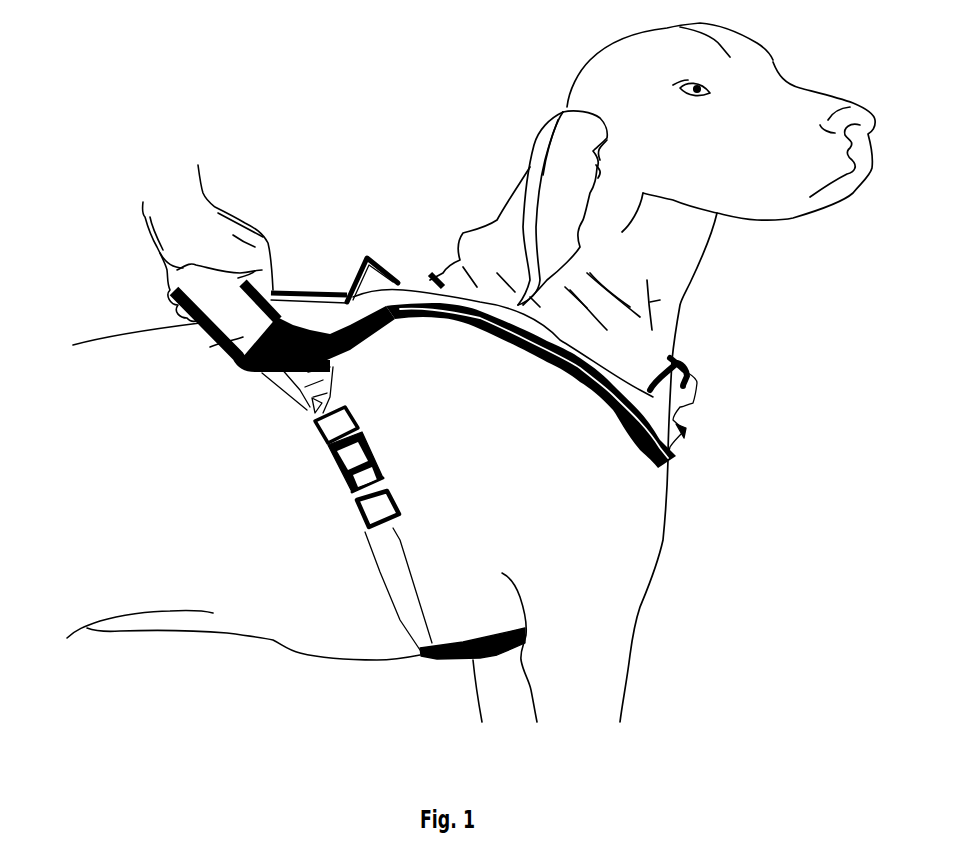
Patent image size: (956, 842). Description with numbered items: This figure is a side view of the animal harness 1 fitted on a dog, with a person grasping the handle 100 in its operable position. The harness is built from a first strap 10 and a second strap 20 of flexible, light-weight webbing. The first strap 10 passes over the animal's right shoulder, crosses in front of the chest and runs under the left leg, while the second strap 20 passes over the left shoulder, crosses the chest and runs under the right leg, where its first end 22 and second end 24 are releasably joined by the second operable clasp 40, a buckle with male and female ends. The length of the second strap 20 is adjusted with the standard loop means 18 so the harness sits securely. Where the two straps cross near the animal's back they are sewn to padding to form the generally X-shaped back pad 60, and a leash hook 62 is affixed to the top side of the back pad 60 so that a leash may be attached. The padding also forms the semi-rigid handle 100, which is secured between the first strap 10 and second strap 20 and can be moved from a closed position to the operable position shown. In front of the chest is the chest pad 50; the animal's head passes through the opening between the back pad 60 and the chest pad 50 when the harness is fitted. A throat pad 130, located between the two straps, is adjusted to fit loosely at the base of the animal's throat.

The animal harness 1 is at (408, 208).
The first strap 10 is at (590, 357).
The standard loop means 18 is at (397, 503).
The second strap 20 is at (412, 570).
The first end of the second strap 22 is at (355, 502).
The second end of the second strap 24 is at (310, 413).
The second operable clasp 40 is at (368, 440).
The chest pad 50 is at (460, 662).
The back pad 60 is at (388, 320).
The leash hook 62 is at (357, 267).
The handle 100 is at (220, 344).
The throat pad 130 is at (686, 361).